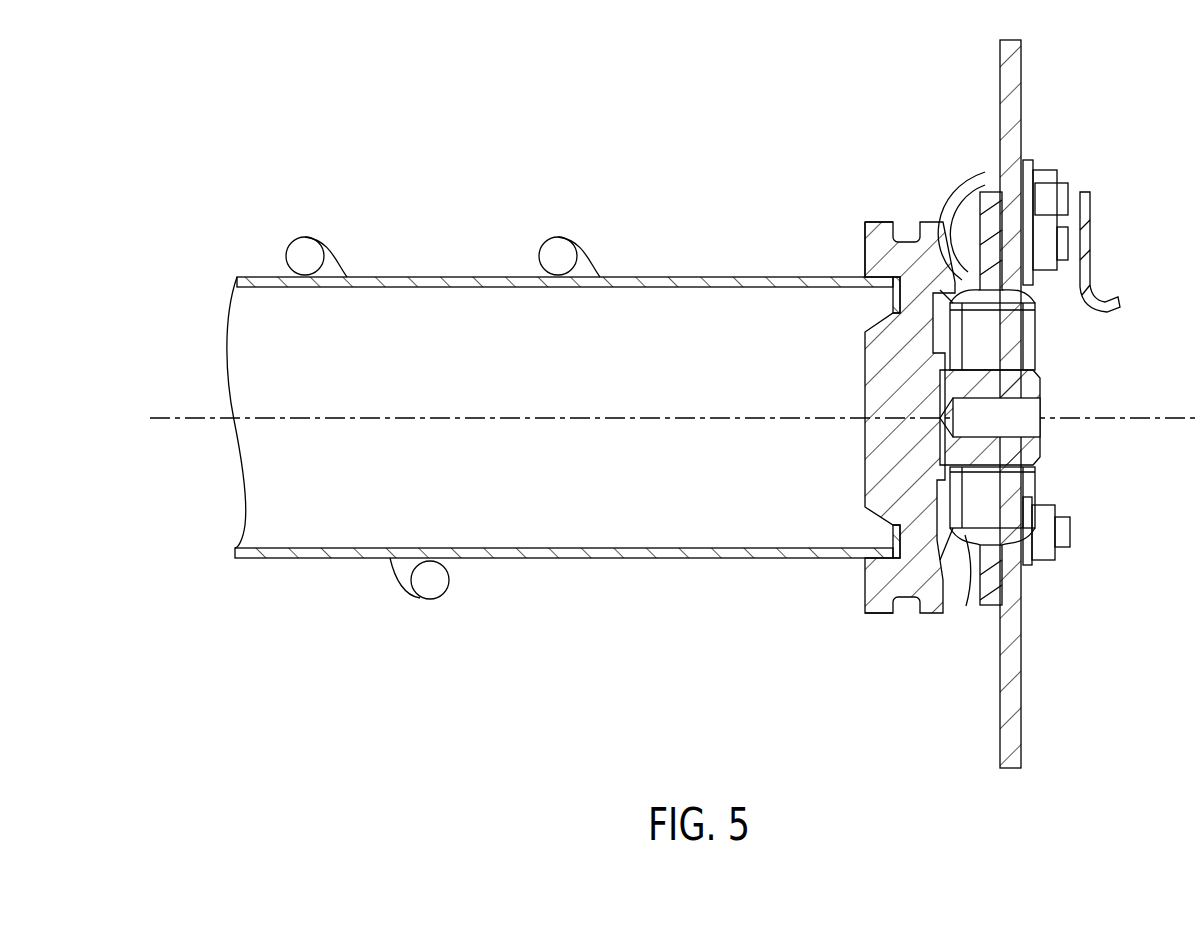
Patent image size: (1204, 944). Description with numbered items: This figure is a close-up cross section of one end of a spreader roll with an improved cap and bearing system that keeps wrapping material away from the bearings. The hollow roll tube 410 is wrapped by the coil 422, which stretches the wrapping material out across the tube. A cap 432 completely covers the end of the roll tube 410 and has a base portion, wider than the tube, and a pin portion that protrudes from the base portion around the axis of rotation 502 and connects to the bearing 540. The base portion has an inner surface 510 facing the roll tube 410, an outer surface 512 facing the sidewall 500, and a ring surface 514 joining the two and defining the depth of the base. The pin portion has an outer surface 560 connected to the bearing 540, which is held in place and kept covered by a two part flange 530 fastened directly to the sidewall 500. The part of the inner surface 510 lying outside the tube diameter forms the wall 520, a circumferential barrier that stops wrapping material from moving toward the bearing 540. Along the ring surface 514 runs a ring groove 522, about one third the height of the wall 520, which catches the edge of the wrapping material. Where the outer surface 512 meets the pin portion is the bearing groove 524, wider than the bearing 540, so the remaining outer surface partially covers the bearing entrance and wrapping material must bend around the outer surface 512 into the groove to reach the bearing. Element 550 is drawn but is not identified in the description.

The roll tube 410 is at (657, 338).
The coil 422 is at (548, 249).
The cap 432 is at (875, 578).
The sidewall 500 is at (1012, 102).
The axis of rotation 502 is at (1163, 410).
The inner surface 510 is at (863, 428).
The outer surface 512 is at (940, 283).
The ring surface 514 is at (883, 222).
The wall 520 is at (873, 260).
The ring groove 522 is at (903, 600).
The bearing groove 524 is at (942, 560).
The two part flange 530 is at (998, 542).
The bearing 540 is at (1004, 495).
The hub 550 is at (1032, 382).
The outer surface of pin portion 560 is at (1000, 367).